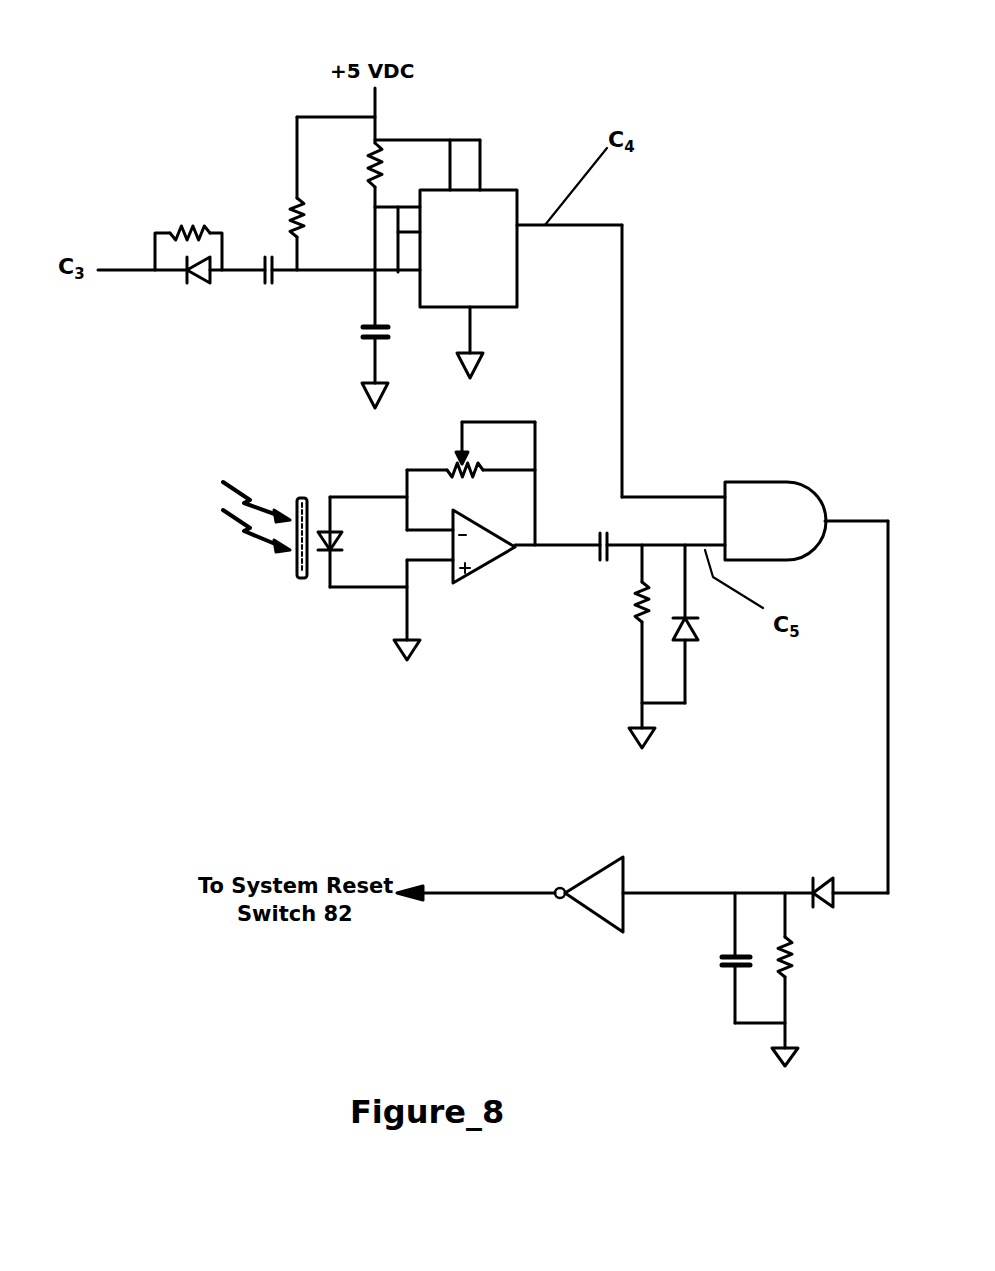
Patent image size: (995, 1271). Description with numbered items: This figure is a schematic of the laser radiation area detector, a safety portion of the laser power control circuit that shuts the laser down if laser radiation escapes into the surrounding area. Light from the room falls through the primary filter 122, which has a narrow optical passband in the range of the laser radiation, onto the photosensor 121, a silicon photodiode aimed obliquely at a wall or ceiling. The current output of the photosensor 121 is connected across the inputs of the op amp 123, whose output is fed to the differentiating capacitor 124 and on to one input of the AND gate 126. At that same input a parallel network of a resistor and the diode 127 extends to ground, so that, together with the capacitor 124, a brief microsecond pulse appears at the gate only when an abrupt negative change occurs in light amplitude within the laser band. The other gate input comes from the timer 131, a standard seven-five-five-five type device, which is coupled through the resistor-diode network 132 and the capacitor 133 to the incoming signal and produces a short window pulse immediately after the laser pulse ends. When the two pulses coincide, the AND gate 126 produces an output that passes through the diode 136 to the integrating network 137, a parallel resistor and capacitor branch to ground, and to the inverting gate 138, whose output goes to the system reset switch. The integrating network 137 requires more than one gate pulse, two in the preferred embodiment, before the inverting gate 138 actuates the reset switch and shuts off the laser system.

The photosensor 121 is at (328, 548).
The primary filter 122 is at (298, 497).
The op amp 123 is at (475, 573).
The differentiating capacitor 124 is at (600, 560).
The AND gate 126 is at (806, 521).
The diode 127 is at (660, 645).
The timer 131 is at (490, 202).
The resistor-diode network 132 is at (193, 230).
The capacitor 133 is at (270, 253).
The diode 136 is at (823, 885).
The integrating network 137 is at (757, 973).
The inverting gate 138 is at (592, 888).